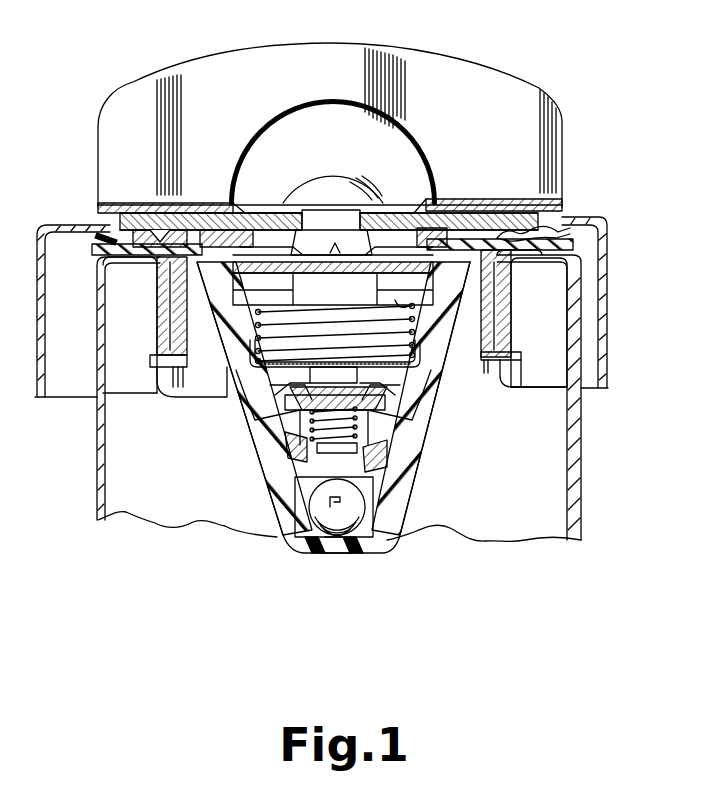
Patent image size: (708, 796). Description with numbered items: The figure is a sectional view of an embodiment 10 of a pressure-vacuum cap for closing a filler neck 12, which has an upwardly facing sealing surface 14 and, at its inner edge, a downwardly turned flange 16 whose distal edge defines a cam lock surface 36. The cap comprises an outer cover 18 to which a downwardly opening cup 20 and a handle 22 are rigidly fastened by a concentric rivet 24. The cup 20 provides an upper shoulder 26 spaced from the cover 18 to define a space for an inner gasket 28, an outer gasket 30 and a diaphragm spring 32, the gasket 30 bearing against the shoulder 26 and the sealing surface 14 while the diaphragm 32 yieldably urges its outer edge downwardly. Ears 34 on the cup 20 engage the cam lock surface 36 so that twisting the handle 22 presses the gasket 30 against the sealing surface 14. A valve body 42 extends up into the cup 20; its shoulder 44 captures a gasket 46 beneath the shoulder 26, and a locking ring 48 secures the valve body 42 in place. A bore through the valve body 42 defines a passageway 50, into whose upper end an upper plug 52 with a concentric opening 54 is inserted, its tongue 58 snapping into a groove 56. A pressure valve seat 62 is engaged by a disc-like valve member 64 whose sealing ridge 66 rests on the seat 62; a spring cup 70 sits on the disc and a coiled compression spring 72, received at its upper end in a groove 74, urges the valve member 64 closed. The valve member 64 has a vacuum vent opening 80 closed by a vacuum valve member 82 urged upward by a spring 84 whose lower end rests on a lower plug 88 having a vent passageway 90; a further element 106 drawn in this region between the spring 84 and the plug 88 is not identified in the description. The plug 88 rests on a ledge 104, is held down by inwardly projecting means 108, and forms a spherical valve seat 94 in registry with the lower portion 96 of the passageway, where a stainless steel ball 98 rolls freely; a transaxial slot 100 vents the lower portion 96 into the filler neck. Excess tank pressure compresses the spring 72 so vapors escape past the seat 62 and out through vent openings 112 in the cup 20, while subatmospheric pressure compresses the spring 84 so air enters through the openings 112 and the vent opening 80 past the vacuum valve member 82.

The embodiment 10 is at (584, 68).
The filler neck 12 is at (581, 403).
The sealing surface 14 is at (123, 247).
The flange 16 is at (502, 283).
The outer cover 18 is at (611, 353).
The cup 20 is at (487, 272).
The handle 22 is at (108, 108).
The rivet 24 is at (363, 187).
The upper shoulder 26 is at (481, 250).
The inner gasket 28 is at (456, 230).
The outer gasket 30 is at (574, 245).
The diaphragm spring 32 is at (561, 227).
The ears 34 is at (163, 368).
The cam lock surface 36 is at (150, 362).
The valve body 42 is at (280, 410).
The shoulder 44 is at (205, 285).
The gasket 46 is at (187, 267).
The locking ring 48 is at (207, 333).
The passageway 50 is at (352, 350).
The upper plug 52 is at (297, 305).
The concentric opening 54 is at (308, 300).
The groove 56 is at (248, 275).
The tongue 58 is at (492, 301).
The pressure valve seat 62 is at (447, 370).
The valve member 64 is at (235, 395).
The sealing ridge 66 is at (213, 430).
The spring cup 70 is at (450, 370).
The spring 72 is at (487, 323).
The groove 74 is at (400, 305).
The vacuum vent opening 80 is at (340, 365).
The vacuum valve member 82 is at (426, 412).
The spring 84 is at (427, 430).
The plug 88 is at (300, 458).
The vent passageway 90 is at (385, 478).
The spherical valve seat 94 is at (387, 470).
The lower portion 96 is at (310, 553).
The ball 98 is at (388, 537).
The slot 100 is at (333, 553).
The ledge 104 is at (390, 485).
The spacer 106 is at (427, 453).
The projecting means 108 is at (270, 390).
The vent openings 112 is at (257, 230).